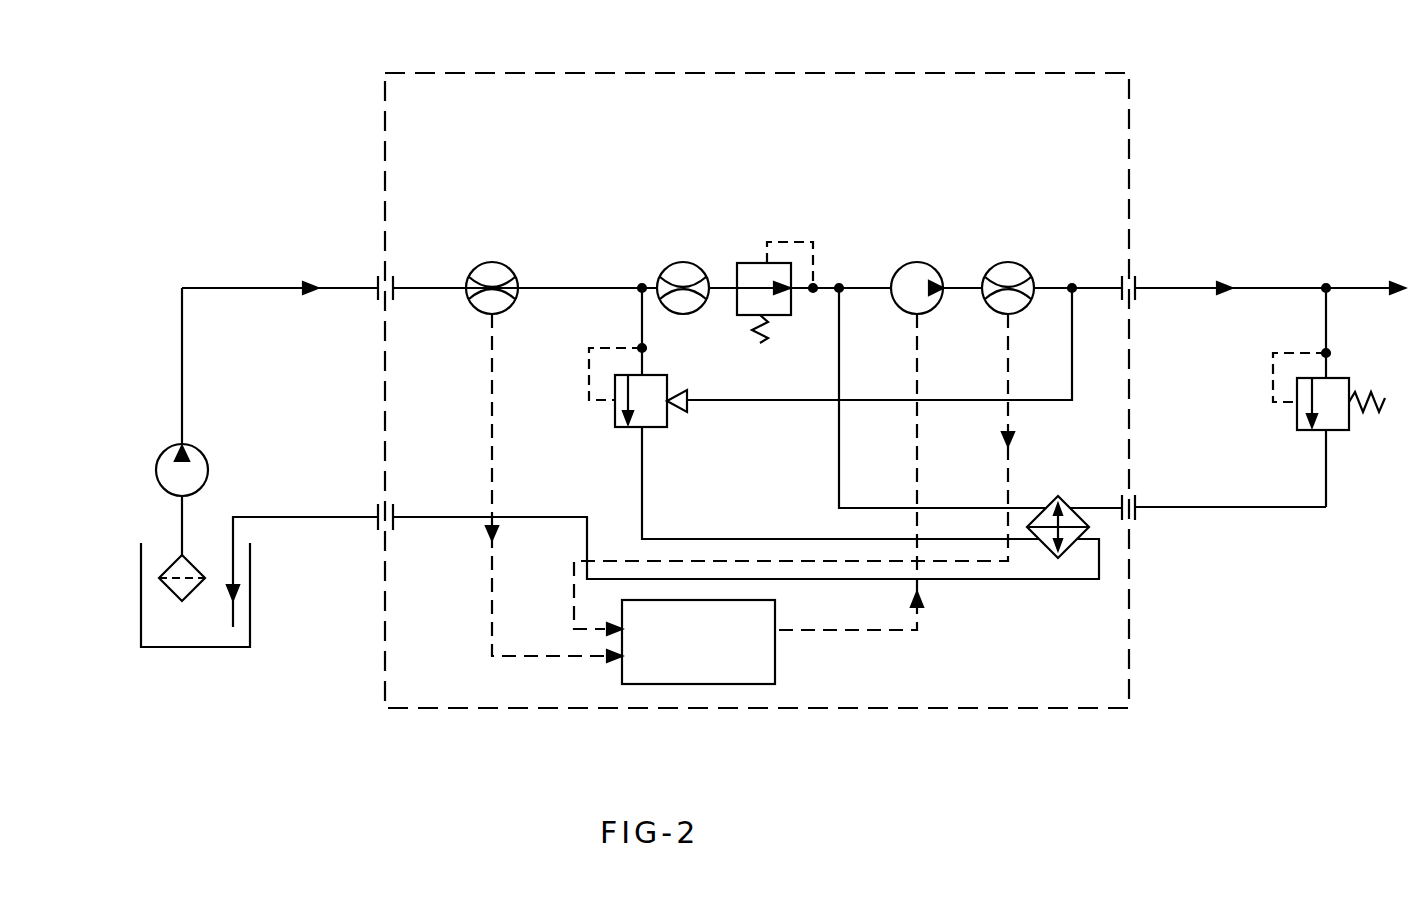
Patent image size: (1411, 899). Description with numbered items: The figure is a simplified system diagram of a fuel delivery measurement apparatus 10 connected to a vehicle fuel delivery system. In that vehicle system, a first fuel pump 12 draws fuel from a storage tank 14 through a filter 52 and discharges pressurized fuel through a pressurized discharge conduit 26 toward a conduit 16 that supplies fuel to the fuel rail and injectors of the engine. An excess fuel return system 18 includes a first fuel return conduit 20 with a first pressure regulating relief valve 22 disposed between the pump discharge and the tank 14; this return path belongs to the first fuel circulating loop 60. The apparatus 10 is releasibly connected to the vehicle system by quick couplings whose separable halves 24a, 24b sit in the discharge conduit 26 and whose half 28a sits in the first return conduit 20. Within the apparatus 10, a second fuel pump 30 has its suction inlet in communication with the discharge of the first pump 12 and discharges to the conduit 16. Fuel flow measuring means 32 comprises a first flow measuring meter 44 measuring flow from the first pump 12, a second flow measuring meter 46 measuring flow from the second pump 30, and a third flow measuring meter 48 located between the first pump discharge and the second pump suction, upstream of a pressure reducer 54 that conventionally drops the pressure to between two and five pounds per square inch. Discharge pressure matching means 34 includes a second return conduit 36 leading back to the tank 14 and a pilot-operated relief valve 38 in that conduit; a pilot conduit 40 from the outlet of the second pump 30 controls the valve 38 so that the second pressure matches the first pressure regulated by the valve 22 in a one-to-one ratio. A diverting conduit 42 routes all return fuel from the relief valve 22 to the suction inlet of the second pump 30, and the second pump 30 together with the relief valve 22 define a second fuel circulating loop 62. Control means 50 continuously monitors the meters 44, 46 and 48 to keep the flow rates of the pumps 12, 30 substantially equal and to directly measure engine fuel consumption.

The fuel delivery measurement apparatus 10 is at (778, 70).
The first fuel pump 12 is at (193, 448).
The storage tank 14 is at (197, 648).
The conduit 16 is at (1348, 287).
The excess fuel return system 18 is at (1315, 540).
The first fuel return conduit 20 is at (293, 515).
The first pressure regulating relief valve 22 is at (1345, 432).
The separable half of first connector 24a is at (375, 287).
The separable half of first connector 24b is at (1137, 282).
The pressurized discharge conduit 26 is at (212, 287).
The separable half of second connector 28a is at (377, 525).
The second fuel pump 30 is at (914, 262).
The fuel flow measuring means 32 is at (670, 235).
The discharge pressure matching means 34 is at (610, 426).
The second return conduit 36 is at (587, 516).
The pilot-operated relief valve 38 is at (650, 428).
The pilot conduit 40 is at (752, 398).
The diverting conduit 42 is at (836, 460).
The first flow measuring meter 44 is at (492, 262).
The second flow measuring meter 46 is at (1008, 262).
The third flow measuring meter 48 is at (712, 190).
The control means 50 is at (775, 665).
The filter 52 is at (170, 565).
The pressure reducer 54 is at (747, 263).
The first fuel circulating loop 60 is at (334, 458).
The second fuel circulating loop 62 is at (1260, 444).